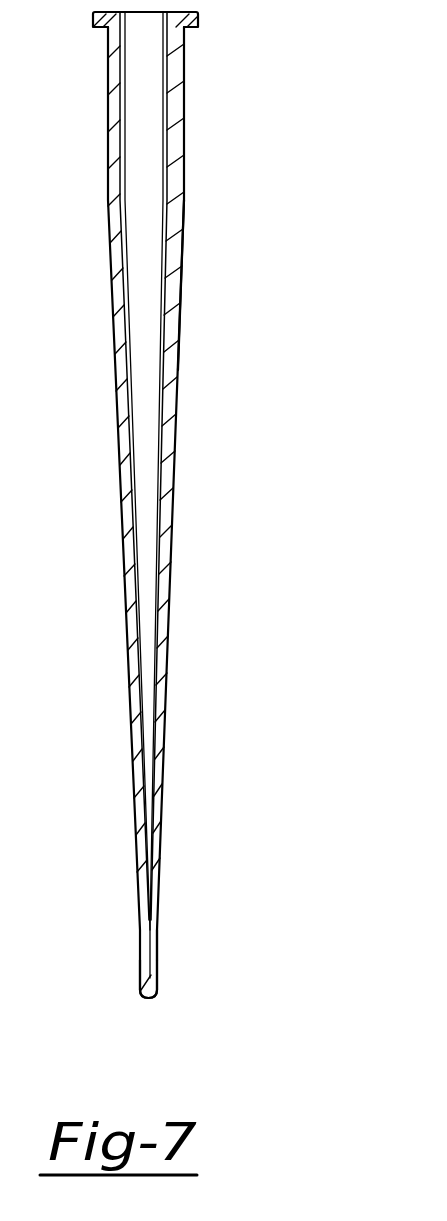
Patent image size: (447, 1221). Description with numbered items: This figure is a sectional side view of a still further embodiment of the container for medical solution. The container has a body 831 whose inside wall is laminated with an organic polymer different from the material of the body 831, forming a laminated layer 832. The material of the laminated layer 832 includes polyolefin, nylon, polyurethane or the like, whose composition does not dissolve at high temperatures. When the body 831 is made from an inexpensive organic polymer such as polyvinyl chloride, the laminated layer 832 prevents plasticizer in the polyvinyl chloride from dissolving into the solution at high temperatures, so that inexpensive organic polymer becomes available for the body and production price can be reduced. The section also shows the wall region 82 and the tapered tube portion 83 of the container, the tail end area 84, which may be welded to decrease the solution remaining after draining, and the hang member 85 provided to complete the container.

The hub flange 82 is at (184, 105).
The tapered tube body 83 is at (174, 492).
The container body 831 is at (183, 290).
The laminated layer 832 is at (181, 335).
The tail end area 84 is at (157, 983).
The hang member 85 is at (158, 940).